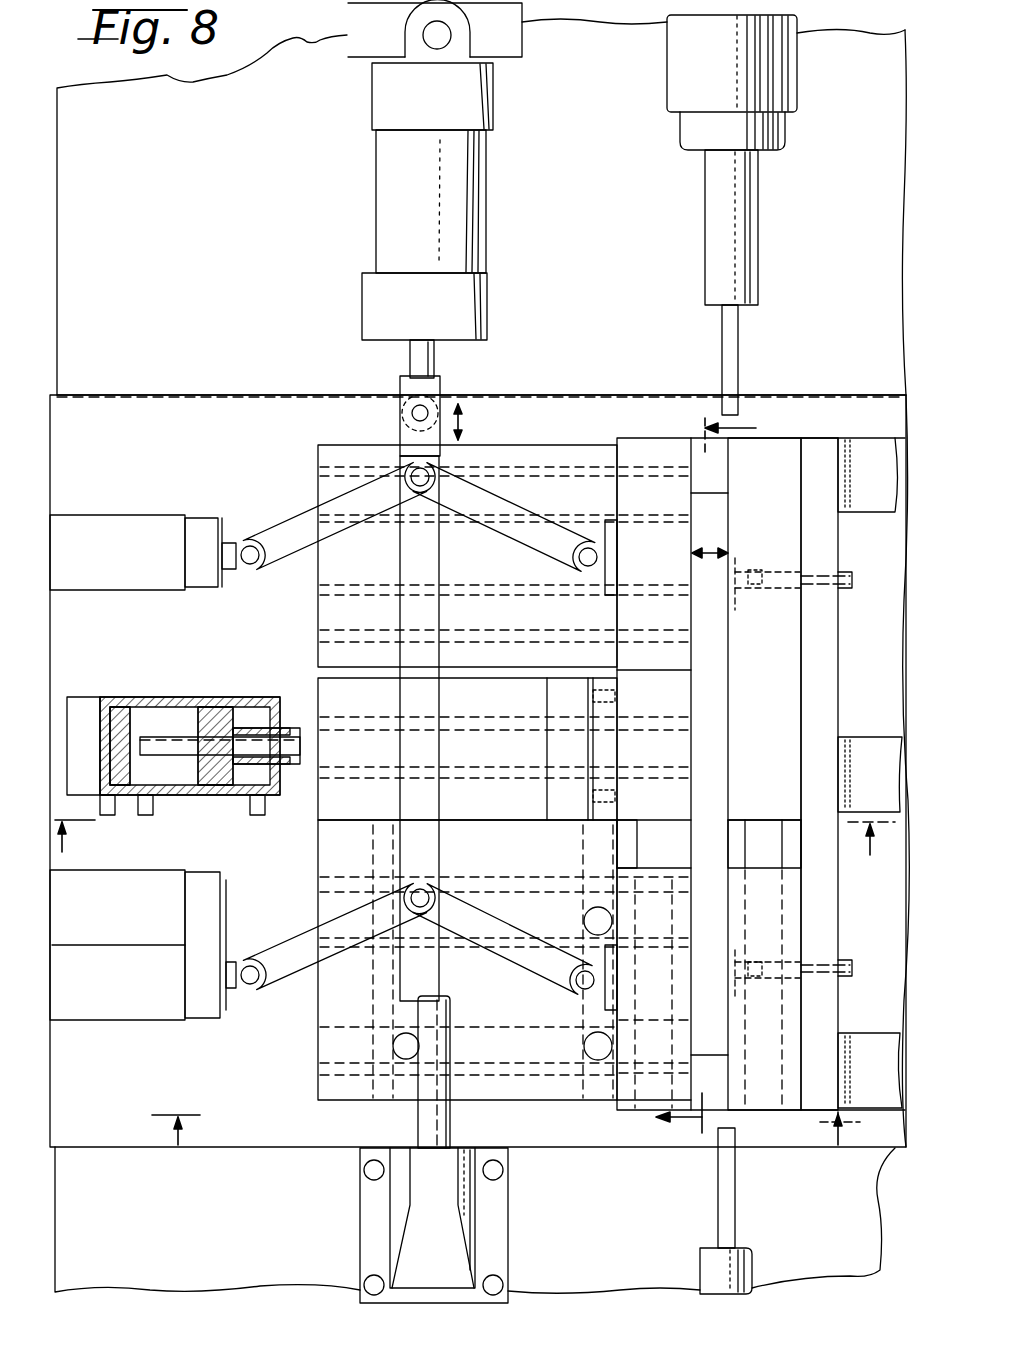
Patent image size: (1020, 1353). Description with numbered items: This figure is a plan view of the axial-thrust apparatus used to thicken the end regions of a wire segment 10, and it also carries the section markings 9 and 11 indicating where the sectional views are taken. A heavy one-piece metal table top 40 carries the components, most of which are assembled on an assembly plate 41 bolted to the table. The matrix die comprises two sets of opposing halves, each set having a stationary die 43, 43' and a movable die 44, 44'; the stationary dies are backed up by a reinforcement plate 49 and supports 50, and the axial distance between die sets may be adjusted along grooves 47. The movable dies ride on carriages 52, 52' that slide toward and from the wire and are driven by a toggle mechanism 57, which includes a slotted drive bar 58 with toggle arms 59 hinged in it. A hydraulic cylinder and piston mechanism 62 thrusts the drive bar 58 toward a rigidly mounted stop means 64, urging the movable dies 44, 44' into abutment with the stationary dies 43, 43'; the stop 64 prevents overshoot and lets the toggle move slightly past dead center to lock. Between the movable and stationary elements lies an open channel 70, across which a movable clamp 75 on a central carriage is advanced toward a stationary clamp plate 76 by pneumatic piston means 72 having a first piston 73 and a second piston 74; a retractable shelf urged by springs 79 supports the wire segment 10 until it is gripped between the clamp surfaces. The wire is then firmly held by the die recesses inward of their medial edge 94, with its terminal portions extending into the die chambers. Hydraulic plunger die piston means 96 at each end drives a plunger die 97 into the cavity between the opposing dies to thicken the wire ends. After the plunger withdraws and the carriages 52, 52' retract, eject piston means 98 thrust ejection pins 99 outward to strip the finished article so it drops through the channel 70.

The table top 40 is at (245, 194).
The assembly plate 41 is at (150, 444).
The hydraulic cylinder and piston mechanism 62 is at (485, 205).
The toggle mechanism 57 is at (385, 382).
The slotted drive bar 58 is at (410, 556).
The carriage 52 is at (467, 516).
The carriage 52' is at (467, 976).
The toggle arms 59 is at (284, 525).
The movable die 44 is at (648, 736).
The movable die 44' is at (643, 1122).
The stationary die 43 is at (798, 402).
The stationary die 43' is at (798, 1127).
The supports 50 is at (886, 486).
The reinforcement plate 49 is at (825, 537).
The ejection pins 99 is at (740, 575).
The eject piston means 98 is at (775, 592).
The hydraulic plunger die piston means 96 is at (775, 95).
The plunger die 97 is at (740, 345).
The movable clamp 75 is at (545, 697).
The springs 79 is at (593, 696).
The medial edge 94 is at (658, 668).
The channel 70 is at (712, 720).
The stationary clamp plate 76 is at (775, 772).
The grooves 47 is at (755, 850).
The pneumatic piston means 72 is at (190, 800).
The first piston 73 is at (228, 710).
The second piston 74 is at (130, 710).
The stop means 64 is at (420, 1128).
The wire segment 10 is at (480, 845).
The section line 9- 9 is at (516, 1128).
The section line 11- 11 is at (724, 778).